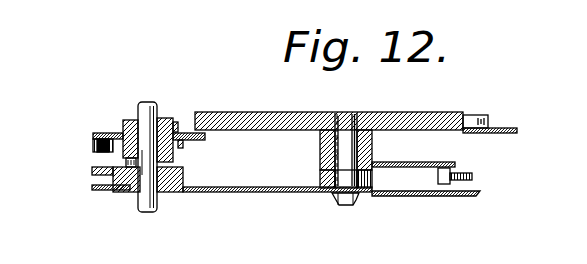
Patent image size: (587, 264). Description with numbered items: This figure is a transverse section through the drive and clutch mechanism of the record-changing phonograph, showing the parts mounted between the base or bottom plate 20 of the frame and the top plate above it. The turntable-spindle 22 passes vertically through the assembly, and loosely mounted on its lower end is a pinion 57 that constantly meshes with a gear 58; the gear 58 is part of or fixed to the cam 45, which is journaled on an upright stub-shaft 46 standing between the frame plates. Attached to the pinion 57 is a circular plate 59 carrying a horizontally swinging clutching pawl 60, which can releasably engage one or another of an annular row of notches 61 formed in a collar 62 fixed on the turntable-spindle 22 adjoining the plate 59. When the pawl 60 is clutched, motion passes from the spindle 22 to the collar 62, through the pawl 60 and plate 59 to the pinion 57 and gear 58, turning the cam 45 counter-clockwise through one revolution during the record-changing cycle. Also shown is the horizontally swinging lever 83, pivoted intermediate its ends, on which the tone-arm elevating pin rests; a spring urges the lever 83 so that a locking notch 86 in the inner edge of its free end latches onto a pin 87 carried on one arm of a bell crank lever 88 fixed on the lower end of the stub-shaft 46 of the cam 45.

The base or bottom plate 20 is at (292, 193).
The turntable-spindle 22 is at (155, 213).
The cam 45 is at (475, 114).
The stub-shaft 46 is at (347, 206).
The pinion 57 is at (122, 125).
The gear 58 is at (265, 131).
The circular plate 59 is at (93, 134).
The clutching pawl 60 is at (95, 147).
The notches 61 is at (183, 147).
The collar 62 is at (122, 152).
The lever 83 is at (472, 177).
The locking notch 86 is at (438, 176).
The pin 87 is at (443, 197).
The bell crank lever 88 is at (423, 164).